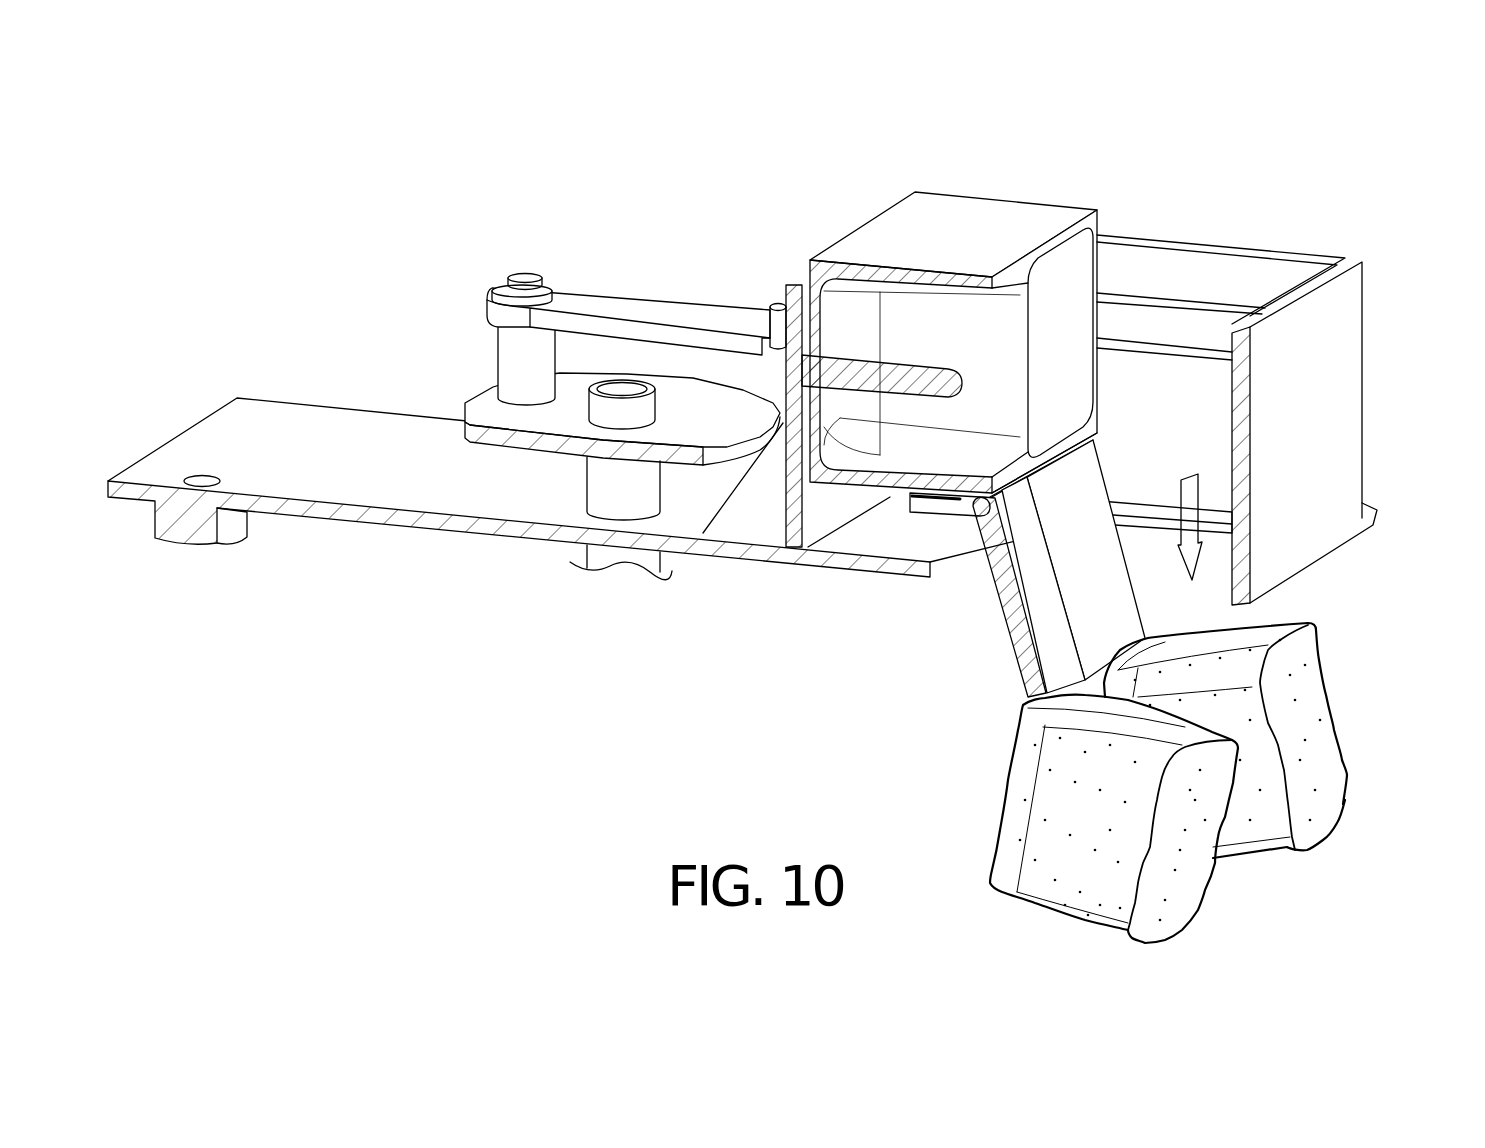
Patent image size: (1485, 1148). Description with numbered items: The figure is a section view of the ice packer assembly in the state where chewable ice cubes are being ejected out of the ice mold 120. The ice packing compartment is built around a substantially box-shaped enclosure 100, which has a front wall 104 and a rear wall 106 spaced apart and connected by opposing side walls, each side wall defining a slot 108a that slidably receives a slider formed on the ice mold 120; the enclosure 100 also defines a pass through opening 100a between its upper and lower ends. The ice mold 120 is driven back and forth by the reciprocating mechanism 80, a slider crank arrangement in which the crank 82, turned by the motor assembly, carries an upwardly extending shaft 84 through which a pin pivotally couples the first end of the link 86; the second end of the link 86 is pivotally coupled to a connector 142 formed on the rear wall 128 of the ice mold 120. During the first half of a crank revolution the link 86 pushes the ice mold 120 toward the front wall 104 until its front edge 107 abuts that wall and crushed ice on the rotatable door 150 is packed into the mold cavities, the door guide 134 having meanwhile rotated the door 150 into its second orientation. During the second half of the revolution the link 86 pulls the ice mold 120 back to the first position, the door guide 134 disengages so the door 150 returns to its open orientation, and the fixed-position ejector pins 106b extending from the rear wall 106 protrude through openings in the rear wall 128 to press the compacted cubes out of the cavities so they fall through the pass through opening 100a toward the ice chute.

The reciprocating mechanism 80 is at (554, 356).
The crank 82 is at (503, 441).
The upwardly extending shaft 84 is at (500, 350).
The link 86 is at (650, 311).
The enclosure 100 is at (1282, 407).
The pass through opening 100a is at (957, 567).
The front wall 104 is at (1345, 365).
The rear wall 106 is at (790, 518).
The ejector pins 106b is at (918, 373).
The front edge 107 is at (1093, 222).
The slot 108a is at (1175, 337).
The ice mold 120 is at (951, 274).
The rear wall 128 is at (808, 272).
The door guide 134 is at (923, 520).
The connector 142 is at (773, 313).
The rotatable door 150 is at (998, 665).